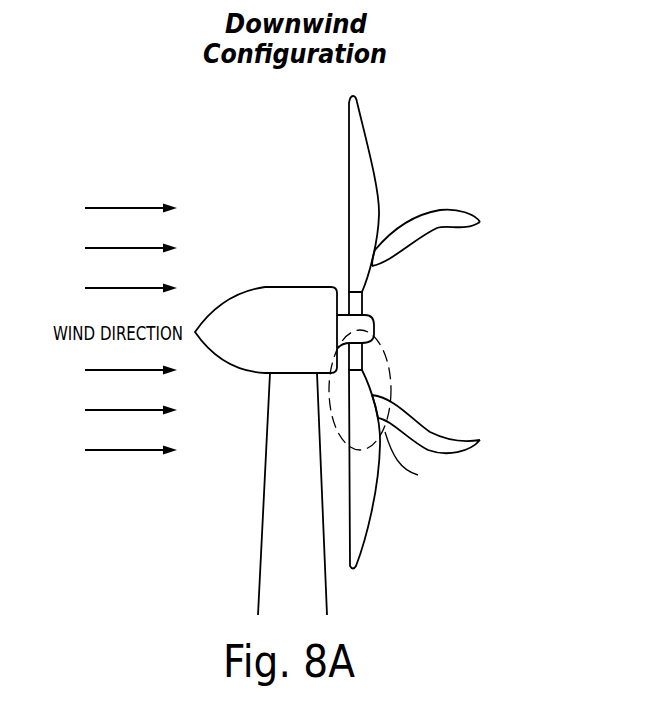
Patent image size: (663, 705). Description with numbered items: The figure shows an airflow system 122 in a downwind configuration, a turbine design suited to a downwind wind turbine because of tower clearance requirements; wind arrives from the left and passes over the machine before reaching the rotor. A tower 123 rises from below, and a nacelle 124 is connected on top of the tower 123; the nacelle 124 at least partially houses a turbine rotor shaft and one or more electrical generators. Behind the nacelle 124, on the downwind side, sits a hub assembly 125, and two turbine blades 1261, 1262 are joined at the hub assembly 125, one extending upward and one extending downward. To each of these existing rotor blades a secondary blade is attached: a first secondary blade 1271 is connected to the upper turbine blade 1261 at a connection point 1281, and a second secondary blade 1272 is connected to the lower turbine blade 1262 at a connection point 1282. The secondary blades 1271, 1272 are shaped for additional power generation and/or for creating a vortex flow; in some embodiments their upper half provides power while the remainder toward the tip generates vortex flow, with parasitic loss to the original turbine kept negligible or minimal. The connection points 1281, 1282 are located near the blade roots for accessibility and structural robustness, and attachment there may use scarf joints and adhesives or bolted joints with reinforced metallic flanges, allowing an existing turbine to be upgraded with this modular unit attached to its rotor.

The airflow system 122 is at (466, 122).
The tower 123 is at (270, 523).
The nacelle 124 is at (307, 287).
The hub assembly 125 is at (373, 328).
The turbine blade 1261 is at (365, 177).
The turbine blade 1262 is at (367, 495).
The secondary blade 1271 is at (437, 228).
The secondary blade 1272 is at (437, 435).
The connection point 1281 is at (372, 268).
The connection point 1282 is at (372, 395).